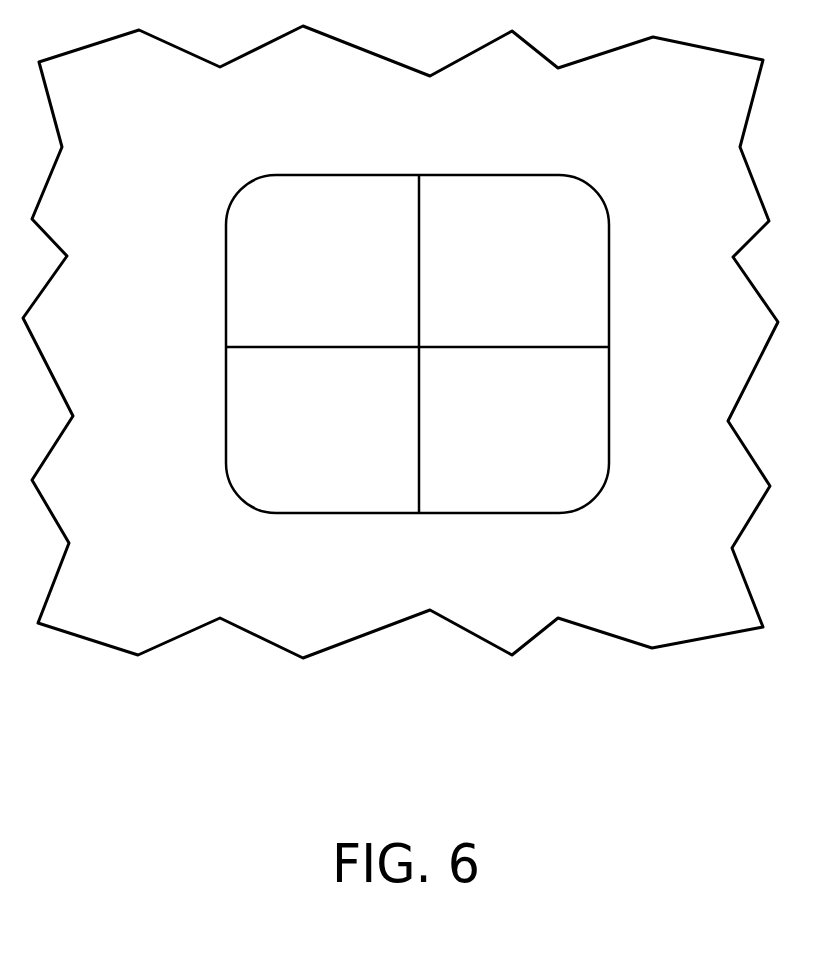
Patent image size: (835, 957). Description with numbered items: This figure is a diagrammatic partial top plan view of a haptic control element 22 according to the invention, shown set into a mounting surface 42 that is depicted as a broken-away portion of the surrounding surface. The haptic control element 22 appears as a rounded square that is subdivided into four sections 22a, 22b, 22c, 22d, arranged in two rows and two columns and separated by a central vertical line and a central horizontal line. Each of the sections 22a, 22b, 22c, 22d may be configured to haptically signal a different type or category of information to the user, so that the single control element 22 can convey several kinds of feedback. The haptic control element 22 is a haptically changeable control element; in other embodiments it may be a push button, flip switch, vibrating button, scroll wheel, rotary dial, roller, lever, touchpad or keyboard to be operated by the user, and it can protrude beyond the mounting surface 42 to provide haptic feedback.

The haptic control element 22 is at (417, 472).
The first section 22a is at (353, 277).
The second section 22b is at (520, 277).
The third section 22c is at (350, 438).
The fourth section 22d is at (523, 434).
The mounting surface 42 is at (537, 612).